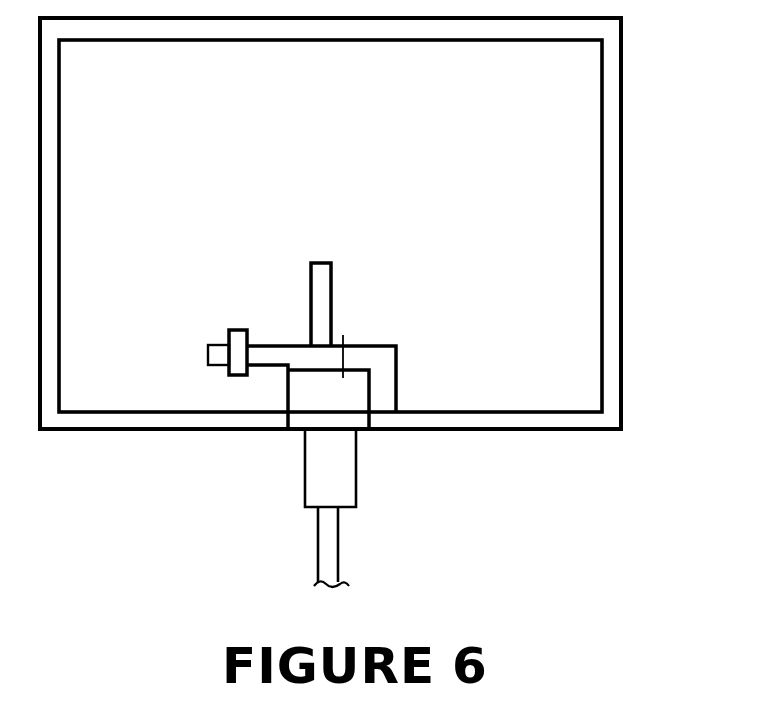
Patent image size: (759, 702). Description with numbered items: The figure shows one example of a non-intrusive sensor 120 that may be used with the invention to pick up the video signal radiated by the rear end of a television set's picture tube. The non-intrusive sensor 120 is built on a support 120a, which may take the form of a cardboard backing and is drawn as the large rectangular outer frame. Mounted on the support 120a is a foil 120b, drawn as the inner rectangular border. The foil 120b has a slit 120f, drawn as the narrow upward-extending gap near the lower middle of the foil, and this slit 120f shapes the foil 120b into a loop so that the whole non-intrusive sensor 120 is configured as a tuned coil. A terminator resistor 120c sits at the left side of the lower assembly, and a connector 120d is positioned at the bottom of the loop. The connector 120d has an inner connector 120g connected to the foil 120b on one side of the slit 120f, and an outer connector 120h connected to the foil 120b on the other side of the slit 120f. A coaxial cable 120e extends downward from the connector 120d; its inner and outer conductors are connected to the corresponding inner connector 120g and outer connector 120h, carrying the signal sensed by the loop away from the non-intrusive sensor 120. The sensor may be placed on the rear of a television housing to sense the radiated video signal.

The non-intrusive sensor 120 is at (630, 340).
The support 120a is at (622, 91).
The foil 120b is at (603, 171).
The terminator resistor 120c is at (233, 367).
The connector 120d is at (363, 402).
The coaxial cable 120e is at (339, 557).
The slit 120f is at (332, 278).
The inner connector 120g is at (345, 358).
The outer connector 120h is at (317, 410).